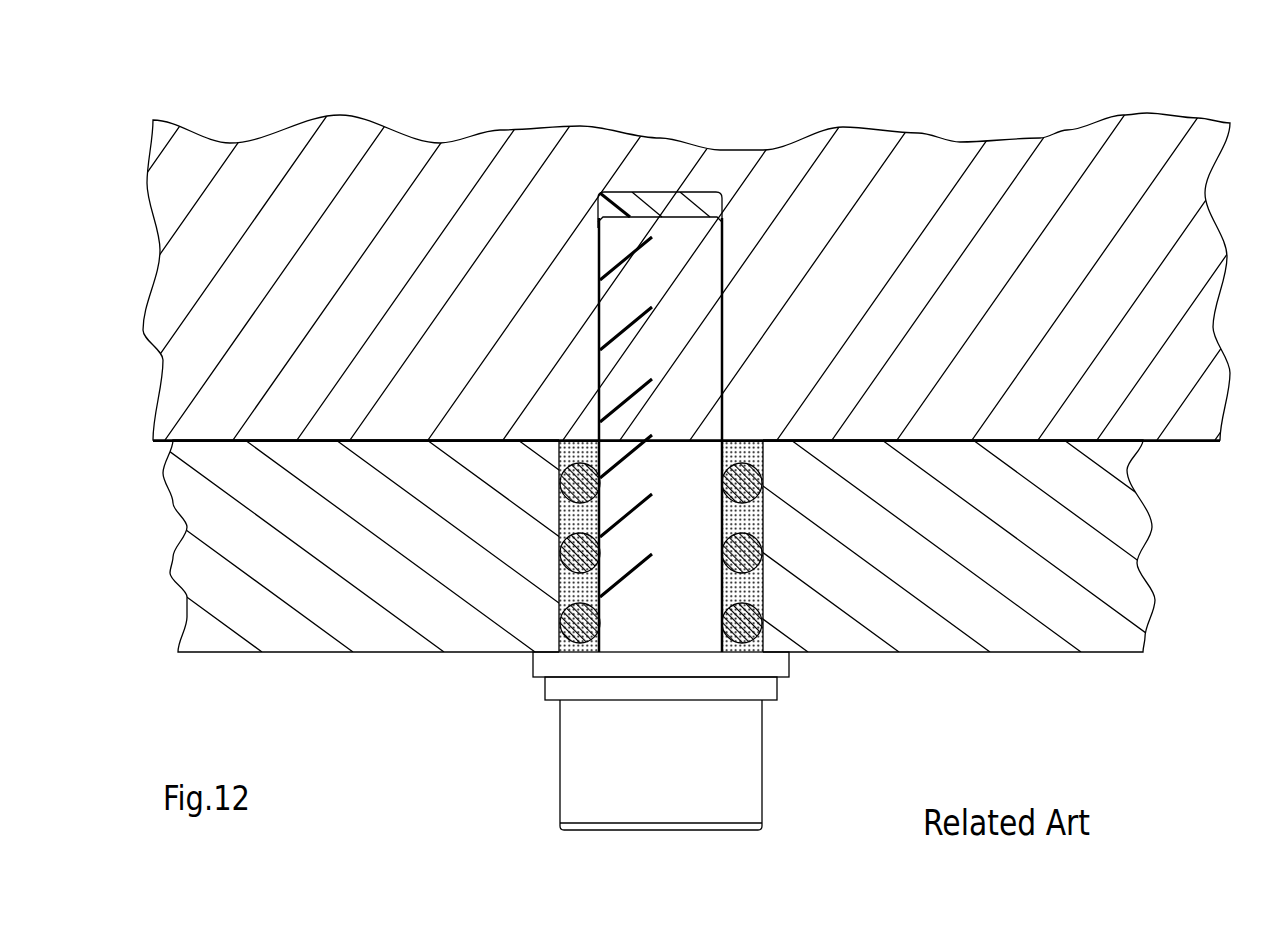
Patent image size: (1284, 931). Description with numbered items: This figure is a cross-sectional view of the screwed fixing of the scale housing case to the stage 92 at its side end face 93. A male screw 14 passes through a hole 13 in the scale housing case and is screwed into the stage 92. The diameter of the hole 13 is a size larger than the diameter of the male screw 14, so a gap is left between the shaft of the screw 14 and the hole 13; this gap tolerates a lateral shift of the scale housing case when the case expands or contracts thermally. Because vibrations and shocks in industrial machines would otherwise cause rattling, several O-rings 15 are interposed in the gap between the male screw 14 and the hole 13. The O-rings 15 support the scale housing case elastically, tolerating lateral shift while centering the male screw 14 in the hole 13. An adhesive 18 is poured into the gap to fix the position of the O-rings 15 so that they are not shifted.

The stage 92 is at (1063, 143).
The side end face 93 is at (1200, 441).
The male screw 14 is at (655, 623).
The O-ring 15 is at (726, 542).
The hole 13 is at (763, 584).
The adhesive 18 is at (572, 590).